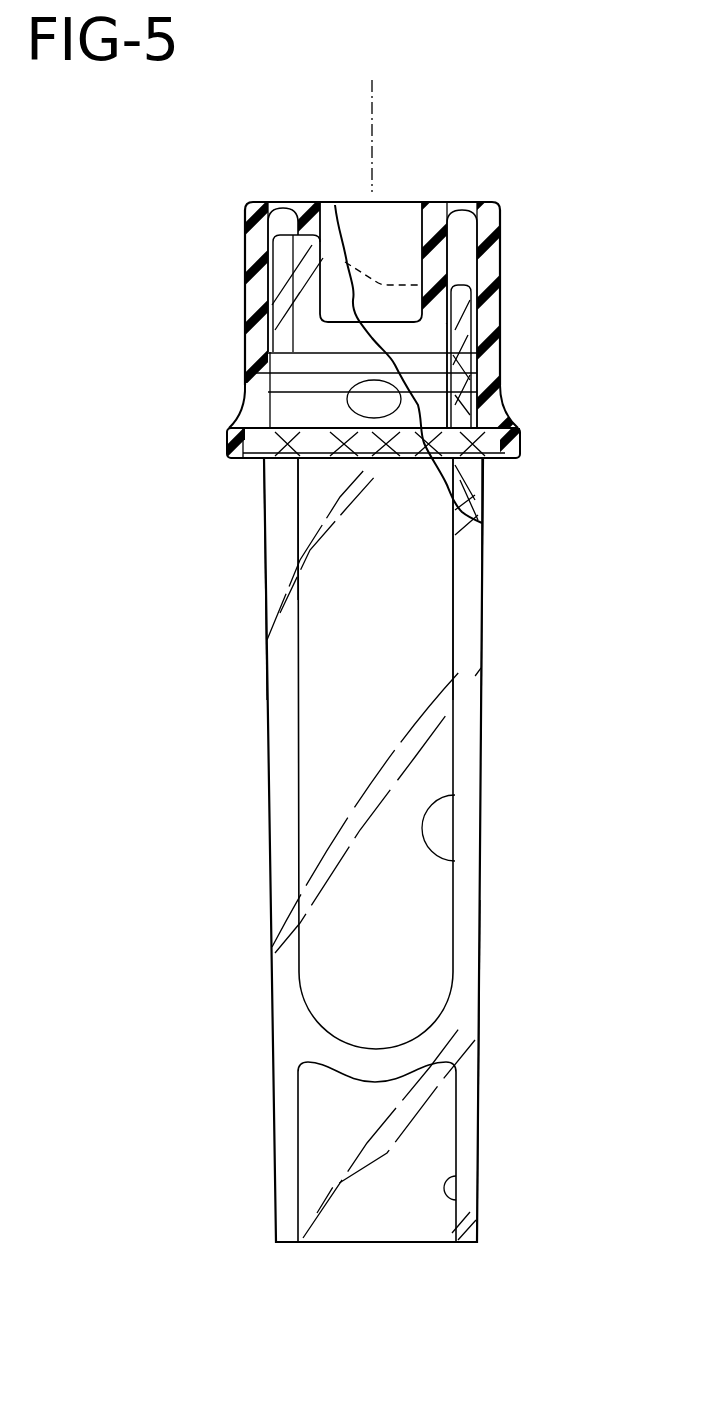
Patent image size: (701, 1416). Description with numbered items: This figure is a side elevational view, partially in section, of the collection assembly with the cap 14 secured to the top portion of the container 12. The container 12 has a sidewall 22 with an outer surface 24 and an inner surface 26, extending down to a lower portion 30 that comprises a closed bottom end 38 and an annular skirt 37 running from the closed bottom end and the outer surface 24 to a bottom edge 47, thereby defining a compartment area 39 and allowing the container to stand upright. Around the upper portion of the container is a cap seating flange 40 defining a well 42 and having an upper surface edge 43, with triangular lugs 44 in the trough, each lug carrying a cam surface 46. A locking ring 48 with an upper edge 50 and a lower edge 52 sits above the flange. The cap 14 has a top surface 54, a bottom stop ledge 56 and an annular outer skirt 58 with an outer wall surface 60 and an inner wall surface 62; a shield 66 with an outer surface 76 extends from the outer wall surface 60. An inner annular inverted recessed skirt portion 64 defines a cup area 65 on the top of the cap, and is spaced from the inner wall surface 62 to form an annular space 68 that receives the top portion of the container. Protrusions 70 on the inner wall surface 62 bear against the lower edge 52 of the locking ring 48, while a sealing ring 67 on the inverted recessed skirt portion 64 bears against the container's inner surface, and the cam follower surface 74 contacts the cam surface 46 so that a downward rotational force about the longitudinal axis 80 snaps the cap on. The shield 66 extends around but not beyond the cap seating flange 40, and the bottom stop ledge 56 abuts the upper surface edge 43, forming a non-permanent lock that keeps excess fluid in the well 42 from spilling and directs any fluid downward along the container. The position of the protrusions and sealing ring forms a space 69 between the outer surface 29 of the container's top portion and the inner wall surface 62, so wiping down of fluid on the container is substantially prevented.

The container 12 is at (262, 775).
The cap 14 is at (232, 310).
The sidewall 22 is at (470, 760).
The outer surface 24 is at (483, 670).
The inner surface 26 is at (443, 860).
The outer surface 29 is at (335, 205).
The lower portion 30 is at (440, 1000).
The annular skirt 37 is at (478, 1120).
The closed bottom end 38 is at (400, 1058).
The compartment area 39 is at (470, 1210).
The cap seating flange 40 is at (258, 455).
The well 42 is at (484, 528).
The upper surface edge 43 is at (497, 447).
The lugs 44 is at (480, 605).
The cam surface 46 is at (268, 600).
The bottom edge 47 is at (397, 1242).
The locking ring 48 is at (266, 370).
The upper edge 50 is at (268, 352).
The lower edge 52 is at (252, 416).
The top surface 54 is at (458, 203).
The bottom stop ledge 56 is at (500, 416).
The annular outer skirt 58 is at (494, 311).
The outer wall surface 60 is at (245, 232).
The inner wall surface 62 is at (466, 277).
The inner annular inverted recessed skirt portion 64 is at (463, 224).
The cup area 65 is at (393, 222).
The shield 66 is at (515, 443).
The sealing ring 67 is at (473, 370).
The annular space 68 is at (275, 200).
The space 69 is at (245, 290).
The protrusions 70 is at (230, 440).
The cam follower surface 74 is at (296, 470).
The outer surface 76 is at (520, 455).
The longitudinal axis 80 is at (372, 80).